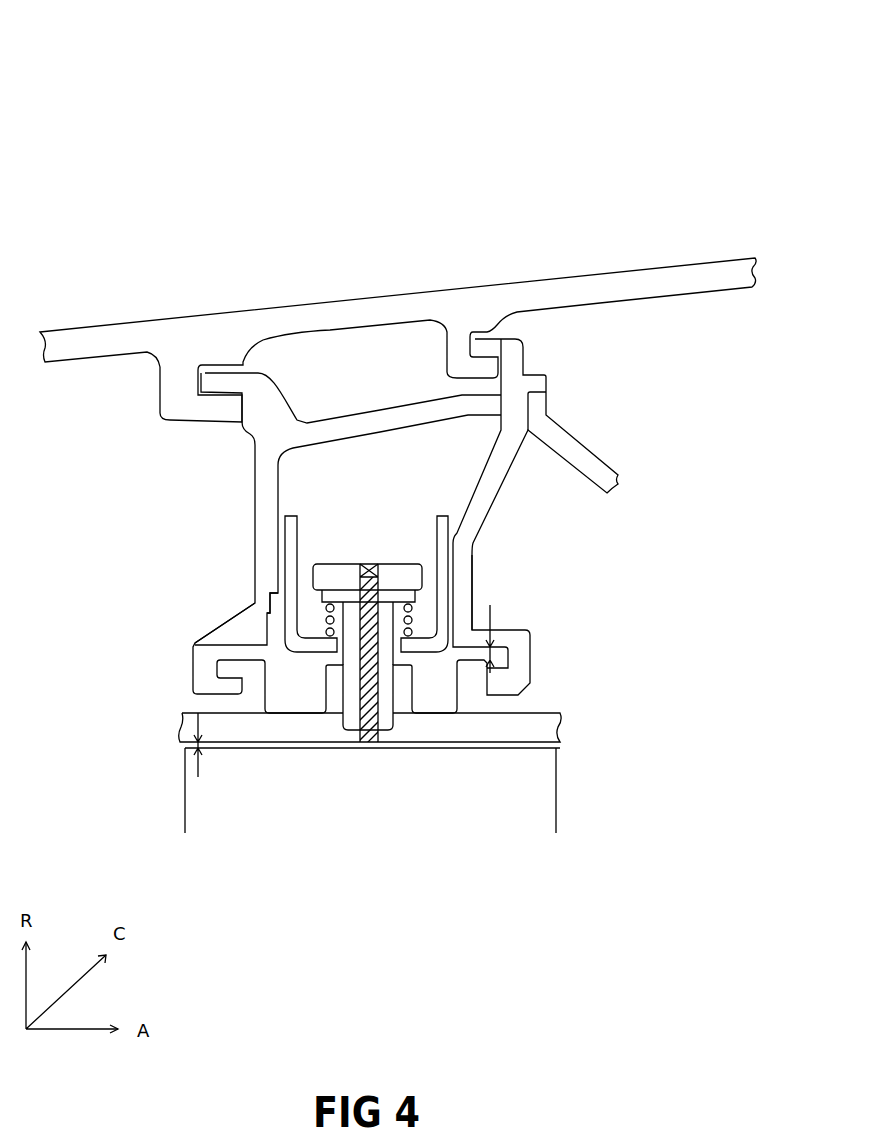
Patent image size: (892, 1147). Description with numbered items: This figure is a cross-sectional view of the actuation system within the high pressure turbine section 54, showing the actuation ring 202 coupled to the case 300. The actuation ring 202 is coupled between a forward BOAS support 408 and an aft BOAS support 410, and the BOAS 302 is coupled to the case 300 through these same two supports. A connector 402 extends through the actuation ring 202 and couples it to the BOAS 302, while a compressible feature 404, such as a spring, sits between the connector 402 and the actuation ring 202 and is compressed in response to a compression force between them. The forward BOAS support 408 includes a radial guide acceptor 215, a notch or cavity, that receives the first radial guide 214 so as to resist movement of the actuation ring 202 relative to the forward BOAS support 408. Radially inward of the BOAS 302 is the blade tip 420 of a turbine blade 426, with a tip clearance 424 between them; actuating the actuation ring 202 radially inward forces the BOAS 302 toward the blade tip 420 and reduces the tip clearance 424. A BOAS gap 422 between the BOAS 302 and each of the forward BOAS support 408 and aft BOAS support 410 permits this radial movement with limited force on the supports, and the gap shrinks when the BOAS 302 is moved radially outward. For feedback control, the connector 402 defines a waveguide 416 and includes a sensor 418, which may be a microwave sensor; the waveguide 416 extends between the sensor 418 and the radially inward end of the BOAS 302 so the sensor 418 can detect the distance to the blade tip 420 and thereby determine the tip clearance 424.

The high pressure turbine section 54 is at (116, 80).
The case 300 is at (607, 275).
The BOAS 302 is at (563, 715).
The actuation ring 202 is at (292, 537).
The first radial guide 214 is at (255, 602).
The radial guide acceptor 215 is at (220, 627).
The connector 402 is at (403, 563).
The compressible feature 404 is at (413, 607).
The forward BOAS support 408 is at (263, 477).
The aft BOAS support 410 is at (510, 466).
The waveguide 416 is at (377, 630).
The sensor 418 is at (363, 563).
The blade tip 420 is at (563, 747).
The BOAS gap 422 is at (492, 613).
The tip clearance 424 is at (200, 757).
The turbine blade 426 is at (557, 812).